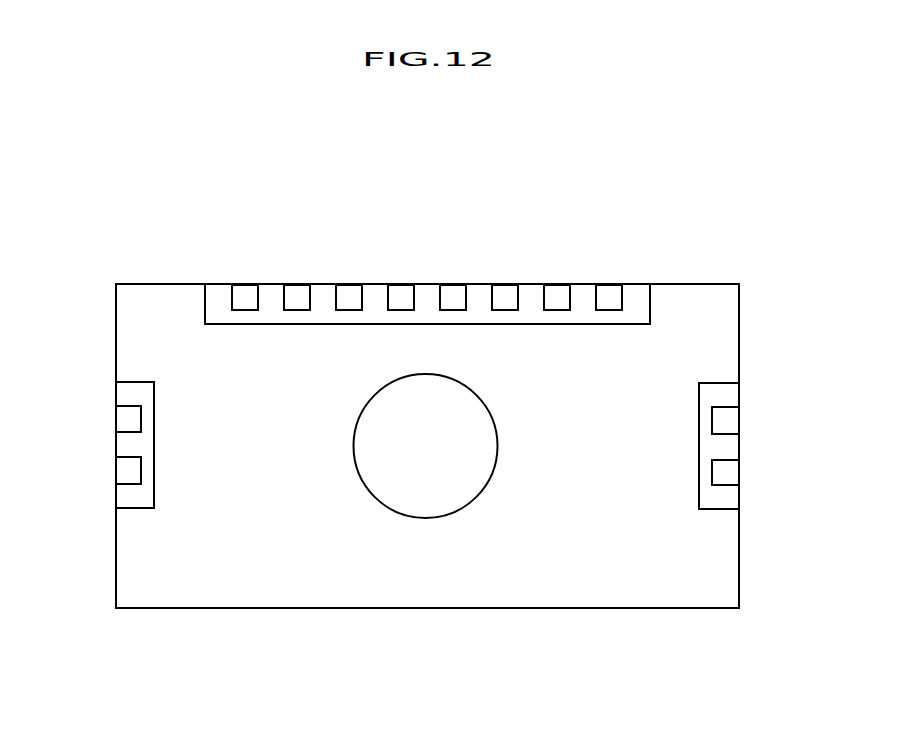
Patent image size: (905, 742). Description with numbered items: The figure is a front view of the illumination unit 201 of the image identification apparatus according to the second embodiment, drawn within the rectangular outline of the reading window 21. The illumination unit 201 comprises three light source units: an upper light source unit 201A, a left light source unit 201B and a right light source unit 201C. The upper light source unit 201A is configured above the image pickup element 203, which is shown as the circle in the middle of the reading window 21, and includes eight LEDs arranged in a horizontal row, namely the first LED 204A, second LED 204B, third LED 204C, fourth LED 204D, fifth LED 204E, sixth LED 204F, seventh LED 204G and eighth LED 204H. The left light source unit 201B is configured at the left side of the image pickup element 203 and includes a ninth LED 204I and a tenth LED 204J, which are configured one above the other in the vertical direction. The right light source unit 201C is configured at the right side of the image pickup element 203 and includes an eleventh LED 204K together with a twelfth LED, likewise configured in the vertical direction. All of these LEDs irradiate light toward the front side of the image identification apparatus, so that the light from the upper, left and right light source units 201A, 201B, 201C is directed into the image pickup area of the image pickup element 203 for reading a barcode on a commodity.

The reading window 21 is at (739, 331).
The illumination unit 201 is at (184, 246).
The upper light source unit 201A is at (633, 298).
The left light source unit 201B is at (108, 379).
The right light source unit 201C is at (748, 381).
The image pickup element 203 is at (497, 446).
The first LED 204A is at (232, 297).
The second LED 204B is at (284, 297).
The third LED 204C is at (336, 297).
The fourth LED 204D is at (388, 297).
The fifth LED 204E is at (440, 297).
The sixth LED 204F is at (492, 297).
The seventh LED 204G is at (544, 297).
The eighth LED 204H is at (596, 297).
The ninth LED 204I is at (128, 406).
The tenth LED 204J is at (128, 457).
The eleventh LED 204K is at (728, 407).